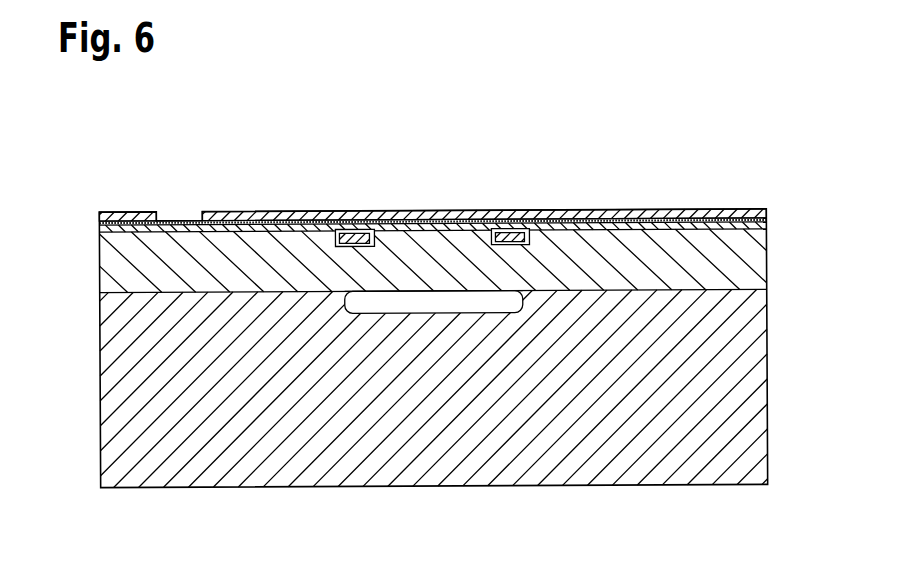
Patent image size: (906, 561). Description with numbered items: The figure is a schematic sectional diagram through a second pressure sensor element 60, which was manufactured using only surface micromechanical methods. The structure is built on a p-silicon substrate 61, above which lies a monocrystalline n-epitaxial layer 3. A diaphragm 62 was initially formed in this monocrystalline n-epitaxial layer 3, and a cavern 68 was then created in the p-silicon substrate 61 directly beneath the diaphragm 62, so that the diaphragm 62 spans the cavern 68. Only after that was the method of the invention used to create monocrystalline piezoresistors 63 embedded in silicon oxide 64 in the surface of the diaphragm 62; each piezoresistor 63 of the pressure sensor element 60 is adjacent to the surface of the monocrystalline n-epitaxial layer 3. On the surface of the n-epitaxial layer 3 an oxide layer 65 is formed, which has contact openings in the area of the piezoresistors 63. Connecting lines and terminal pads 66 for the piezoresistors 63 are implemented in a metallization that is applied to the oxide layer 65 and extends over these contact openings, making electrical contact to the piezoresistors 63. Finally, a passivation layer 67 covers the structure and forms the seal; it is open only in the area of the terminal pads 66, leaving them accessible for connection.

The second pressure sensor element 60 is at (751, 166).
The p-silicon substrate 61 is at (120, 362).
The monocrystalline n-epitaxial layer 3 is at (118, 269).
The diaphragm 62 is at (398, 250).
The monocrystalline piezoresistors 63 is at (356, 233).
The silicon oxide 64 is at (335, 229).
The oxide layer 65 is at (685, 222).
The terminal pads 66 is at (183, 218).
The passivation layer 67 is at (613, 211).
The cavern 68 is at (443, 305).